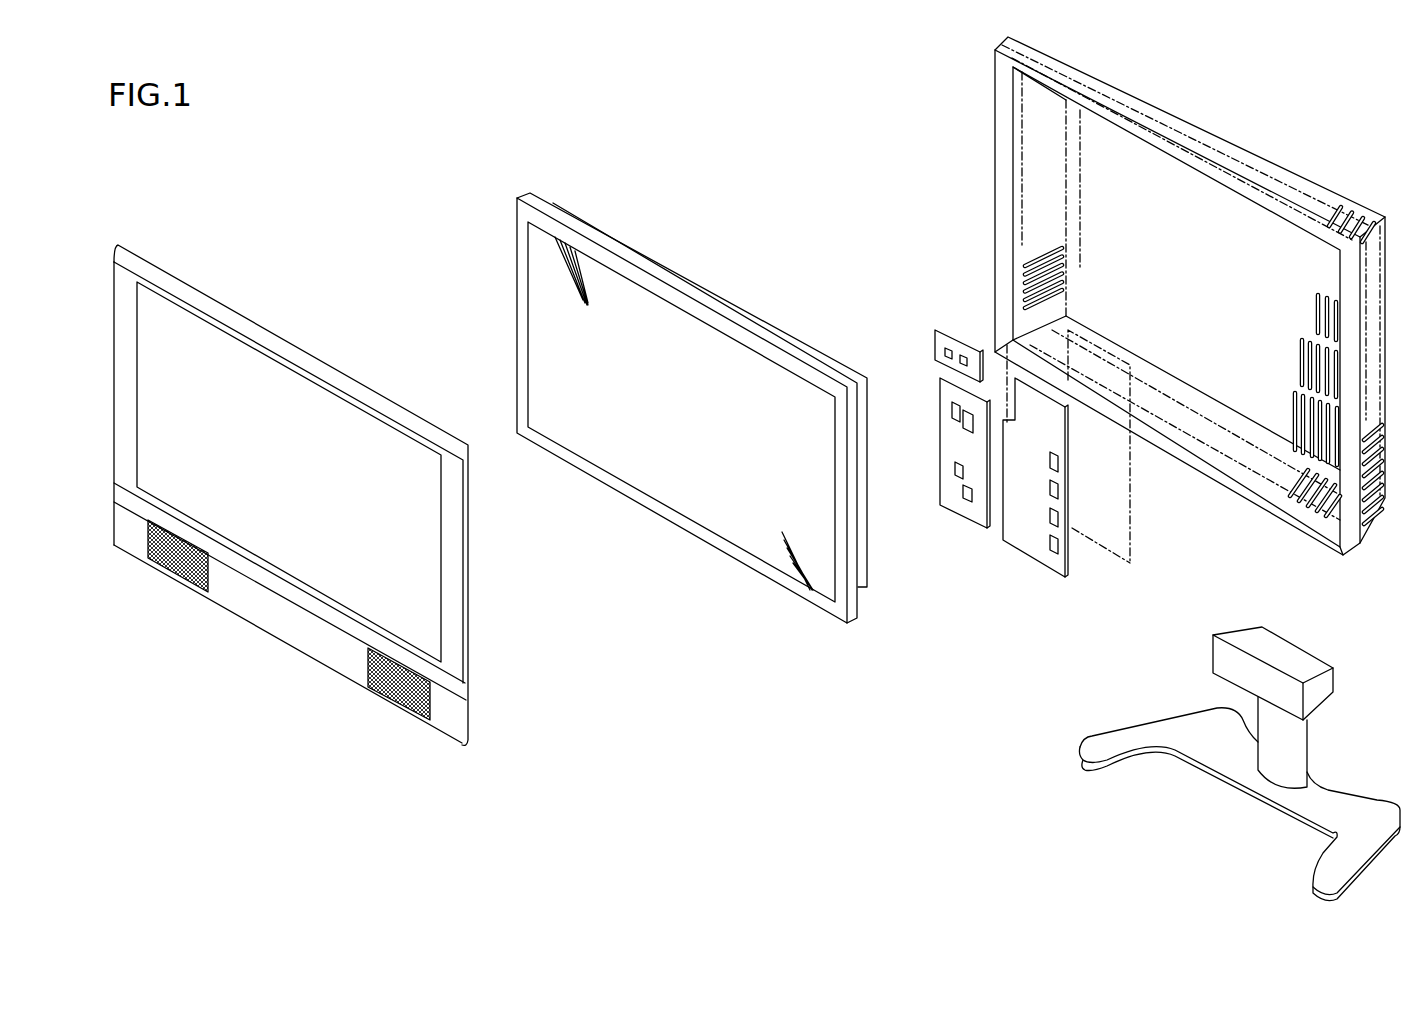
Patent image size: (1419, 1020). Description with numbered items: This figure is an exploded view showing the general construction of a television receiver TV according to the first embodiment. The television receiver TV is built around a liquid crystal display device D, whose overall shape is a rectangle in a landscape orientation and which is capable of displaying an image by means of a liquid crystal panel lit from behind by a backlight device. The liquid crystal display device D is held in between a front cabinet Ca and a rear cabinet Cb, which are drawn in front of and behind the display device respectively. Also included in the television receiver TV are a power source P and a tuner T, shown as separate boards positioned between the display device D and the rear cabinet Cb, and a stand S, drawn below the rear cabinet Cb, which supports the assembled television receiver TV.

The television receiver TV is at (717, 128).
The front cabinet Ca is at (273, 327).
The liquid crystal display device D is at (633, 243).
The rear cabinet Cb is at (1182, 118).
The tuner T is at (955, 515).
The power source P is at (1027, 555).
The stand S is at (1148, 752).